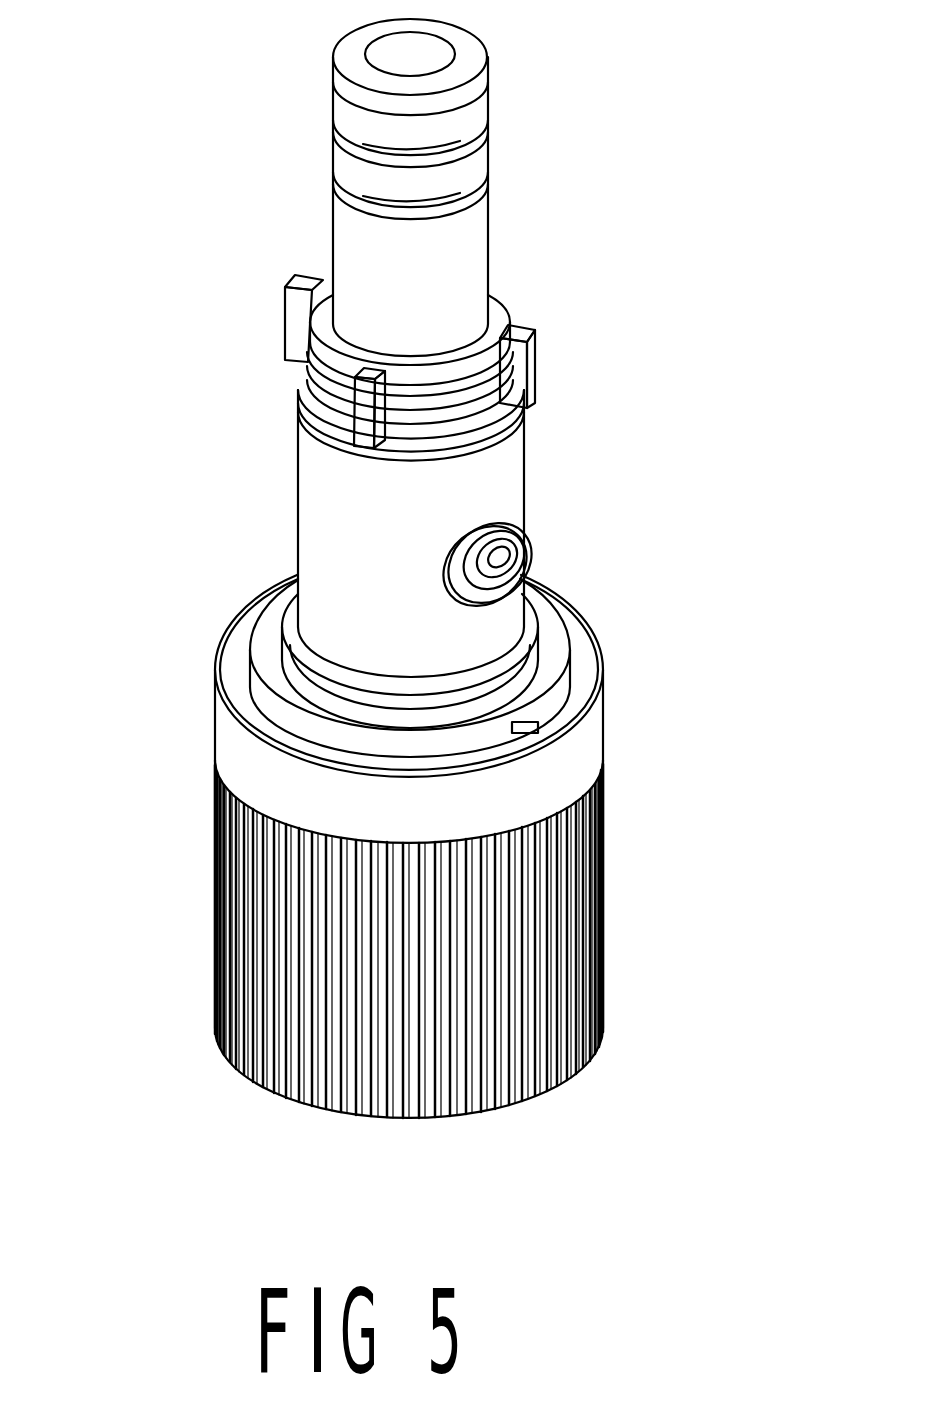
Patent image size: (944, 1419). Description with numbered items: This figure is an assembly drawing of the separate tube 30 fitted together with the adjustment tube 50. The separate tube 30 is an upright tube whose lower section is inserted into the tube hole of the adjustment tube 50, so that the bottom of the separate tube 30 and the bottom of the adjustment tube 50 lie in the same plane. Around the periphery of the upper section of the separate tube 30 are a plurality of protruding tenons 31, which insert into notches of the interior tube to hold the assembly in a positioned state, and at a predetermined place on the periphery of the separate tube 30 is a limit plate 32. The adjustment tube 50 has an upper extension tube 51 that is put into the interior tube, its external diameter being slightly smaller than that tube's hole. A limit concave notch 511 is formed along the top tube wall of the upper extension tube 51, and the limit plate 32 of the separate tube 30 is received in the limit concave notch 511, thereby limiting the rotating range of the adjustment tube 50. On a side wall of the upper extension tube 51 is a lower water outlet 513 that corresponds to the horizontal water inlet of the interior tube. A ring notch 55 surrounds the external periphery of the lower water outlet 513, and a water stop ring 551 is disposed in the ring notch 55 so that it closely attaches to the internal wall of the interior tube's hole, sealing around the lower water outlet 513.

The separate tube 30 is at (480, 160).
The protruding tenons 31 is at (293, 313).
The limit plate 32 is at (350, 490).
The adjustment tube 50 is at (537, 783).
The upper extension tube 51 is at (350, 613).
The limit concave notch 511 is at (353, 433).
The lower water outlet 513 is at (505, 565).
The ring notch 55 is at (535, 625).
The water stop ring 551 is at (518, 543).